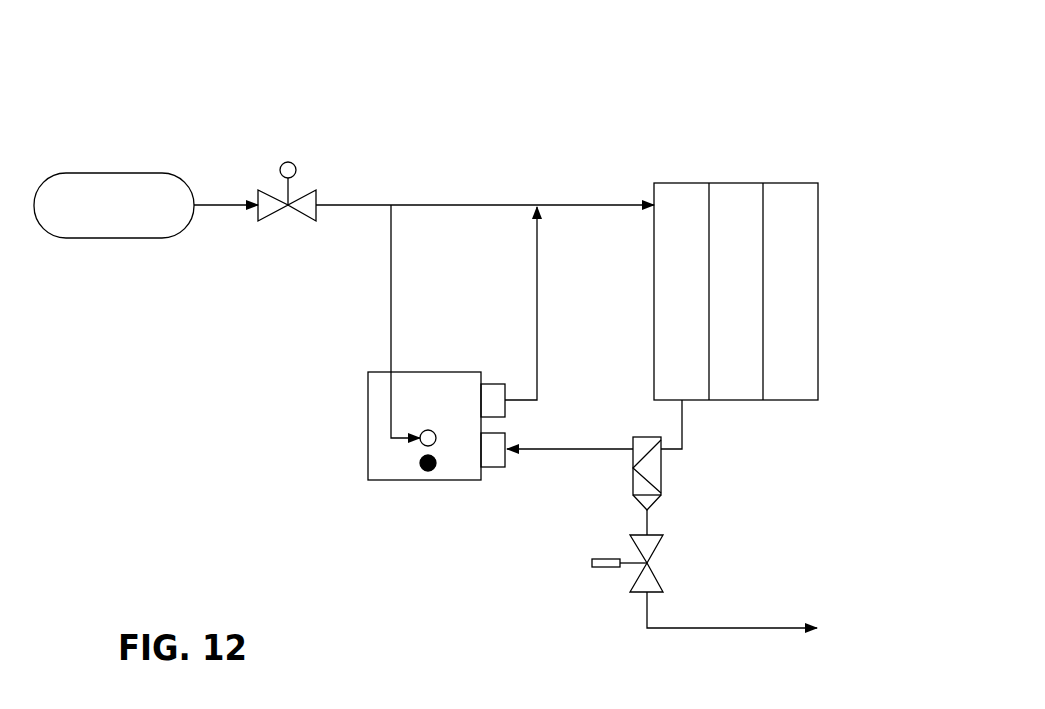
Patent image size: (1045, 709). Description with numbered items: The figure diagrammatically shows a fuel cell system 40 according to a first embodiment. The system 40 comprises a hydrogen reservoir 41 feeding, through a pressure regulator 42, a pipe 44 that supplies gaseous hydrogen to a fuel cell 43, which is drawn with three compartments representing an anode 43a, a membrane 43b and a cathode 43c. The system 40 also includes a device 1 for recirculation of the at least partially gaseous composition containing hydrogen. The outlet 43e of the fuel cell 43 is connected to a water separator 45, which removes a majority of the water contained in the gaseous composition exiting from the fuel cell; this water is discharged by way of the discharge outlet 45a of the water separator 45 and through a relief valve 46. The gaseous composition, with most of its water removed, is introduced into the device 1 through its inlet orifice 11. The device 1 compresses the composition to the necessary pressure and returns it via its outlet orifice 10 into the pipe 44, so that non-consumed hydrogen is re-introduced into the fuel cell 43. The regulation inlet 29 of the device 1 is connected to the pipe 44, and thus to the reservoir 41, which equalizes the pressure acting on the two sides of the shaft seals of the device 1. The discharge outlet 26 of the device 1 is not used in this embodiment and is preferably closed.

The device for recirculation 1 is at (356, 418).
The outlet orifice 10 is at (496, 384).
The inlet orifice 11 is at (507, 439).
The discharge outlet 26 is at (415, 467).
The regulation inlet 29 is at (428, 430).
The fuel cell system 40 is at (373, 128).
The hydrogen reservoir 41 is at (140, 257).
The pressure regulator 42 is at (284, 240).
The fuel cell 43 is at (798, 360).
The anode 43a is at (682, 278).
The membrane 43b is at (735, 278).
The cathode 43c is at (790, 278).
The outlet of the fuel cell 43e is at (690, 403).
The pipe 44 is at (553, 202).
The water separator 45 is at (606, 473).
The discharge outlet of the water separator 45a is at (652, 515).
The relief valve 46 is at (613, 584).